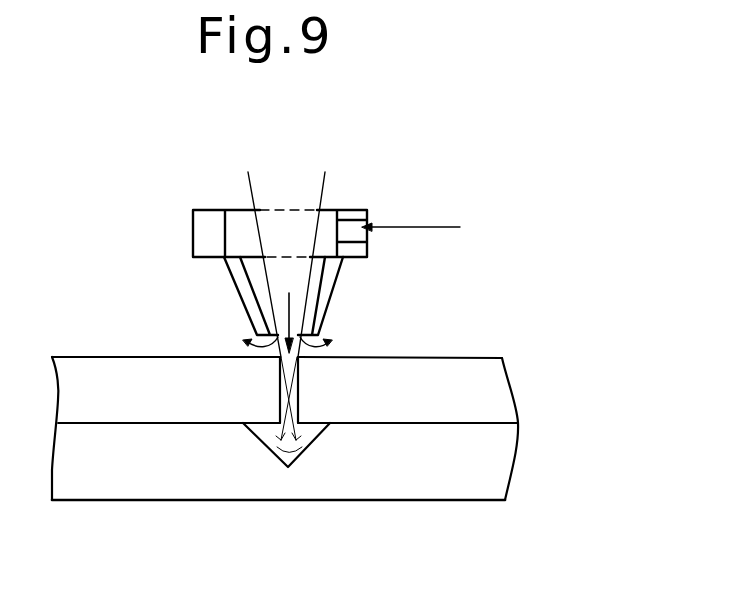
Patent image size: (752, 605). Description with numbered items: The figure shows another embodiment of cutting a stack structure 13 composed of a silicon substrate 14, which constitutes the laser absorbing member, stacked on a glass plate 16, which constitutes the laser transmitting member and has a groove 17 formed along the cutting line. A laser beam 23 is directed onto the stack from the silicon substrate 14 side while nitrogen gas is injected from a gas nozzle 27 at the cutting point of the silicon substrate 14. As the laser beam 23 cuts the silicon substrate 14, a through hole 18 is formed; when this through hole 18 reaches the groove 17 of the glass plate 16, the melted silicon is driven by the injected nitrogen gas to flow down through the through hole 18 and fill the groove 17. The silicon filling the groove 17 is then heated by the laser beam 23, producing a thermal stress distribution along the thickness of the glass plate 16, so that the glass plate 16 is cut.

The workpiece 13 is at (433, 355).
The silicon substrate 14 is at (497, 395).
The glass plate 16 is at (497, 458).
The groove 17 is at (312, 433).
The through hole 18 is at (283, 395).
The laser beam 23 is at (292, 187).
The shield gas nozzle 27 is at (320, 335).